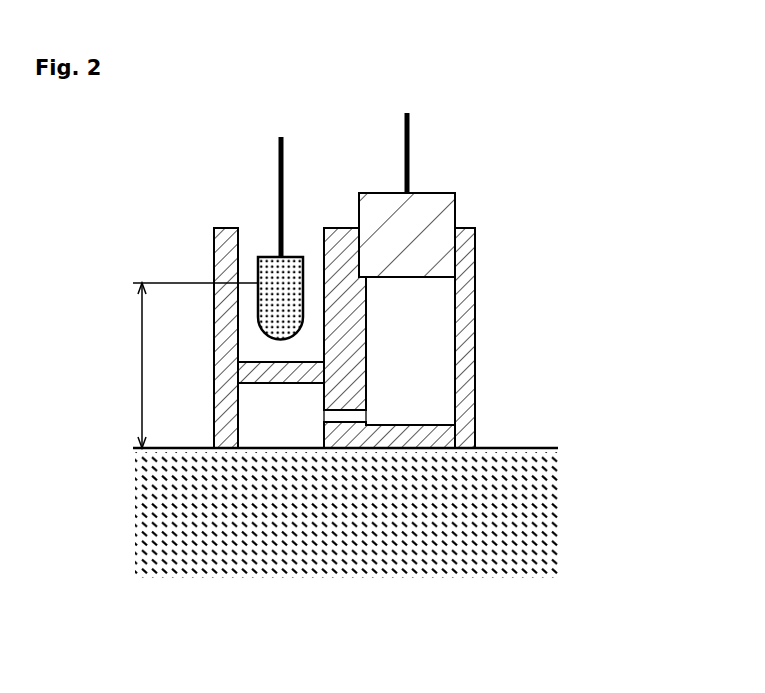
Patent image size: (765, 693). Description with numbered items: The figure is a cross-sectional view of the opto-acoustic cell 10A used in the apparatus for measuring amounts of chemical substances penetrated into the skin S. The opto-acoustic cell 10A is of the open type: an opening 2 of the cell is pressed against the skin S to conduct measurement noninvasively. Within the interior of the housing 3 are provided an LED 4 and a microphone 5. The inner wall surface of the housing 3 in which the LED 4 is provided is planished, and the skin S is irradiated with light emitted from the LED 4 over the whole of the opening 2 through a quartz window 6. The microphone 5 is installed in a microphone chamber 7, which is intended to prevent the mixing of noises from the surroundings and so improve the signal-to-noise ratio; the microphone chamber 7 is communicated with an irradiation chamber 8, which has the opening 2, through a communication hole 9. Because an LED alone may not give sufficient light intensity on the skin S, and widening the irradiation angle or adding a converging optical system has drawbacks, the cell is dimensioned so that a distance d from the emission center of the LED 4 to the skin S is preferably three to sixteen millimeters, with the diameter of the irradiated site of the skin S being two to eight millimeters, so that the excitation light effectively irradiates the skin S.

The opening 2 is at (278, 452).
The skin S is at (548, 503).
The housing 3 is at (475, 295).
The LED 4 is at (258, 297).
The microphone 5 is at (435, 203).
The quartz window 6 is at (267, 362).
The microphone chamber 7 is at (430, 375).
The irradiation chamber 8 is at (258, 419).
The communication hole 9 is at (370, 414).
The distance d is at (188, 365).
The opto-acoustic cell 10A is at (678, 400).